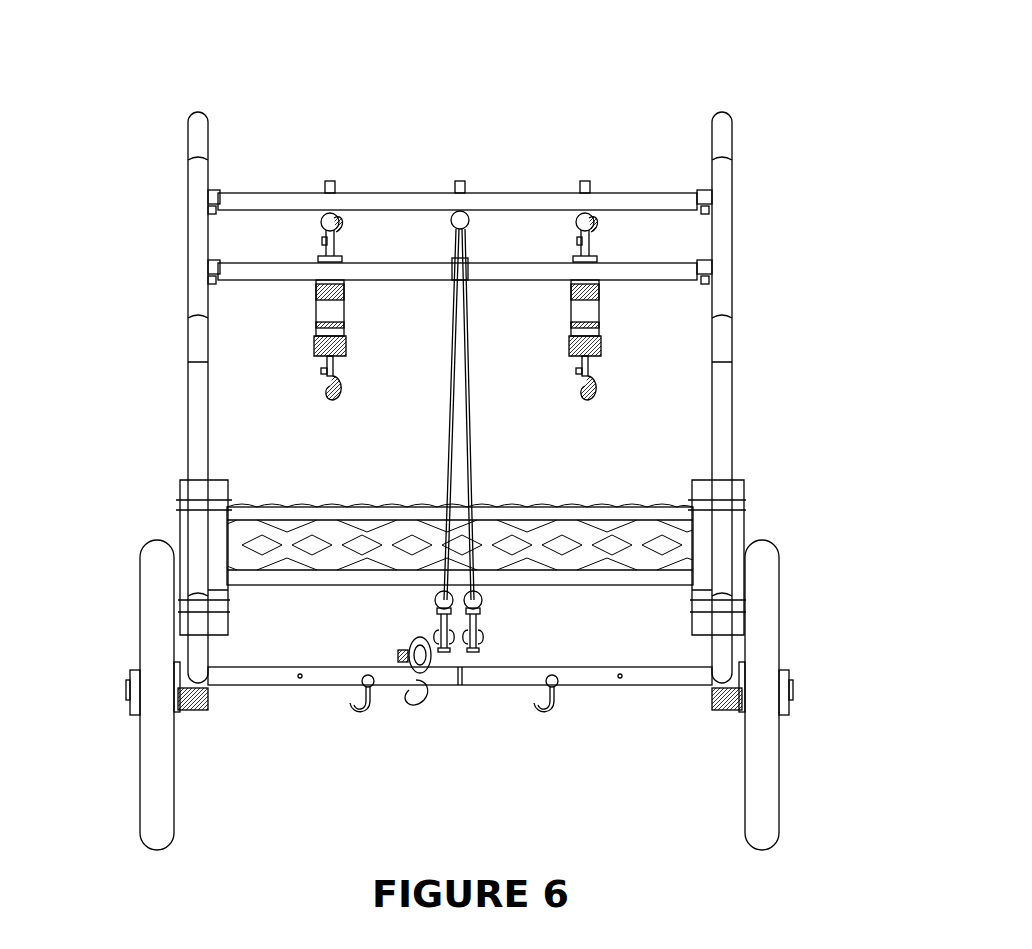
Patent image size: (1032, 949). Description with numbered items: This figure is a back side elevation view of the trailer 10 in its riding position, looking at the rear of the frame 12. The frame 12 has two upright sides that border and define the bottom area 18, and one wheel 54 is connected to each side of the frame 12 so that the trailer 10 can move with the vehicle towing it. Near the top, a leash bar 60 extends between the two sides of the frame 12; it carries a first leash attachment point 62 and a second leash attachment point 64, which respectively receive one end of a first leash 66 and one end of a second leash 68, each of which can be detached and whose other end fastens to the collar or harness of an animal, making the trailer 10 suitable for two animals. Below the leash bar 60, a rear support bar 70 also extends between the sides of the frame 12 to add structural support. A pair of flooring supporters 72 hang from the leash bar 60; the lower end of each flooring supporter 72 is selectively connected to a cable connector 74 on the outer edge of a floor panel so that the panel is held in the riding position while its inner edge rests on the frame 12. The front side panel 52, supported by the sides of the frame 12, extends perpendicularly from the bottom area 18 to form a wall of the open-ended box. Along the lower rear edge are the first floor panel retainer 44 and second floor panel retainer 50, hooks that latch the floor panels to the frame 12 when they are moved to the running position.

The trailer 10 is at (630, 52).
The frame 12 is at (722, 137).
The bottom area 18 is at (276, 730).
The first floor panel retainer 44 is at (362, 705).
The second floor panel retainer 50 is at (548, 708).
The front side panel 52 is at (680, 540).
The wheel 54 is at (160, 745).
The leash bar 60 is at (275, 200).
The first leash attachment point 62 is at (334, 198).
The second leash attachment point 64 is at (583, 198).
The first leash 66 is at (322, 320).
The second leash 68 is at (593, 318).
The rear support bar 70 is at (660, 272).
The flooring supporter 72 is at (450, 427).
The cable connector 74 is at (472, 690).